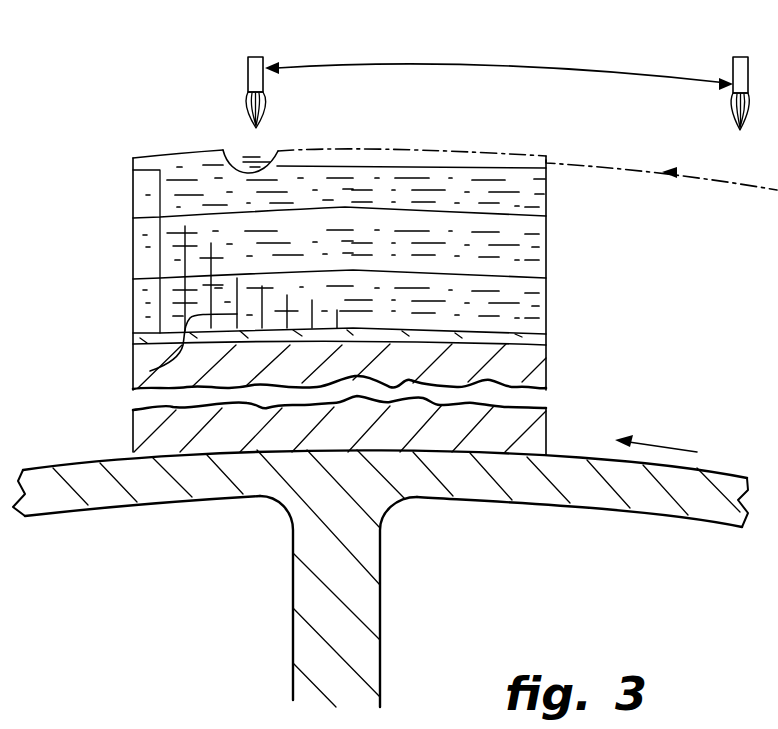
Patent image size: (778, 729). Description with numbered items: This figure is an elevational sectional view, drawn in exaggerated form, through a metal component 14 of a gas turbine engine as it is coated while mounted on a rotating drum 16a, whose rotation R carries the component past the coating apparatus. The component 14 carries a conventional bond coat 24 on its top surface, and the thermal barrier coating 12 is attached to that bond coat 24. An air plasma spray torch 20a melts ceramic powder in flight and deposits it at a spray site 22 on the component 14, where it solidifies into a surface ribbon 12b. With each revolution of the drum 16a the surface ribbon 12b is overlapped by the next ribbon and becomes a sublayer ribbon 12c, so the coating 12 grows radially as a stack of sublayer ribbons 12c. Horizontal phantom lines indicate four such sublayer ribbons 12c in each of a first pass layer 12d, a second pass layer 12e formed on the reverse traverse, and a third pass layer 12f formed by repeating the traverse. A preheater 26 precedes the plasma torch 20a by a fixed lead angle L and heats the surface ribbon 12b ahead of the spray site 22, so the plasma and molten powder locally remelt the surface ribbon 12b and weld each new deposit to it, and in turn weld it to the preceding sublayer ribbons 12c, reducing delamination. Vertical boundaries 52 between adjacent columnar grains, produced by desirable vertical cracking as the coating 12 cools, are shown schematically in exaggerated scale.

The thermal barrier coating 12 is at (147, 152).
The surface ribbon 12b is at (433, 167).
The sublayer ribbon 12c is at (558, 173).
The first pass layer 12d is at (130, 282).
The second pass layer 12e is at (130, 222).
The third pass layer 12f is at (130, 160).
The component 14 is at (548, 377).
The drum 16a is at (388, 551).
The air plasma spray torch 20a is at (248, 68).
The spray site 22 is at (250, 167).
The bond coat 24 is at (550, 345).
The preheater 26 is at (733, 62).
The vertical boundaries 52 is at (135, 370).
The lead angle L is at (507, 63).
The rotation R is at (675, 447).